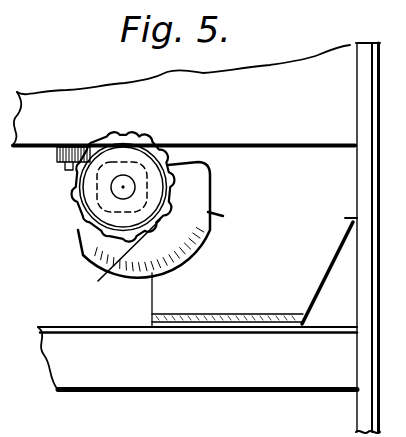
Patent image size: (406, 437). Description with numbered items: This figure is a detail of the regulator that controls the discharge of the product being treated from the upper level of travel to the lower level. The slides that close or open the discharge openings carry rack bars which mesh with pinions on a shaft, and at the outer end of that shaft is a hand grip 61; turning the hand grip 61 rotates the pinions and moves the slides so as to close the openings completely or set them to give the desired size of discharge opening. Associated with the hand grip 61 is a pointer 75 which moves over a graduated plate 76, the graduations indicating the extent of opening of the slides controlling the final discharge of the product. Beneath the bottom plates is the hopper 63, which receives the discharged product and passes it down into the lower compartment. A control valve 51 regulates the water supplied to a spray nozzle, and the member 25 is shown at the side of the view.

The upright post 25 is at (357, 70).
The control valve 51 is at (71, 147).
The hand grip 61 is at (163, 119).
The hopper 63 is at (254, 264).
The pointer 75 is at (98, 281).
The graduated plate 76 is at (80, 244).